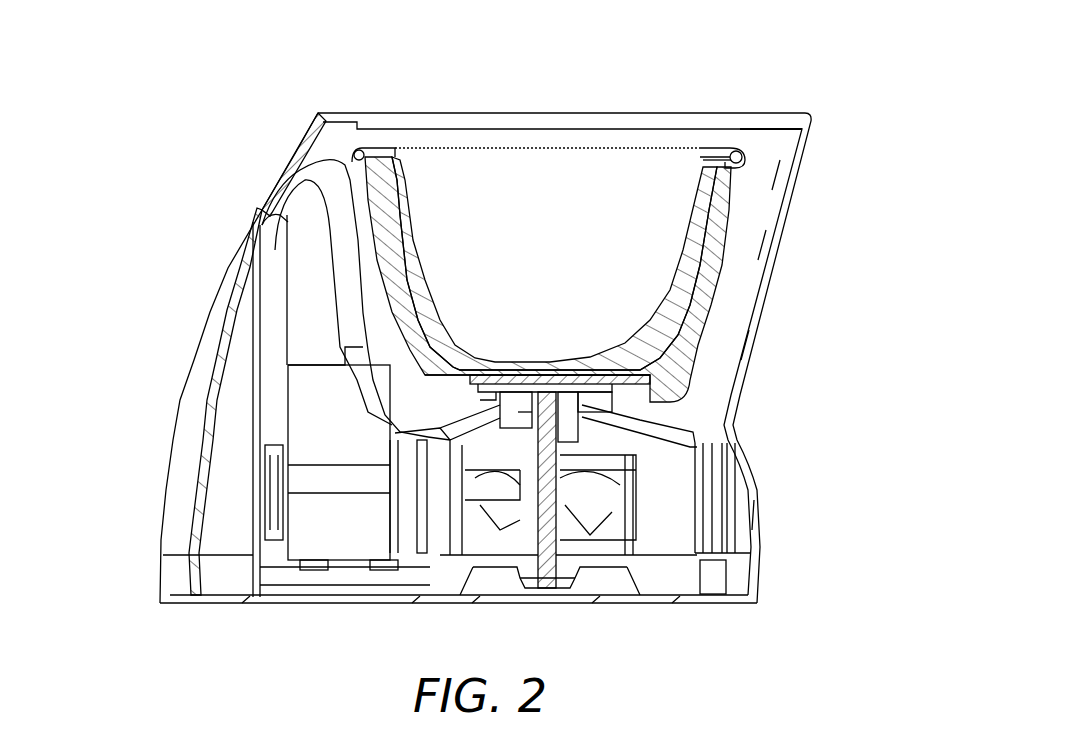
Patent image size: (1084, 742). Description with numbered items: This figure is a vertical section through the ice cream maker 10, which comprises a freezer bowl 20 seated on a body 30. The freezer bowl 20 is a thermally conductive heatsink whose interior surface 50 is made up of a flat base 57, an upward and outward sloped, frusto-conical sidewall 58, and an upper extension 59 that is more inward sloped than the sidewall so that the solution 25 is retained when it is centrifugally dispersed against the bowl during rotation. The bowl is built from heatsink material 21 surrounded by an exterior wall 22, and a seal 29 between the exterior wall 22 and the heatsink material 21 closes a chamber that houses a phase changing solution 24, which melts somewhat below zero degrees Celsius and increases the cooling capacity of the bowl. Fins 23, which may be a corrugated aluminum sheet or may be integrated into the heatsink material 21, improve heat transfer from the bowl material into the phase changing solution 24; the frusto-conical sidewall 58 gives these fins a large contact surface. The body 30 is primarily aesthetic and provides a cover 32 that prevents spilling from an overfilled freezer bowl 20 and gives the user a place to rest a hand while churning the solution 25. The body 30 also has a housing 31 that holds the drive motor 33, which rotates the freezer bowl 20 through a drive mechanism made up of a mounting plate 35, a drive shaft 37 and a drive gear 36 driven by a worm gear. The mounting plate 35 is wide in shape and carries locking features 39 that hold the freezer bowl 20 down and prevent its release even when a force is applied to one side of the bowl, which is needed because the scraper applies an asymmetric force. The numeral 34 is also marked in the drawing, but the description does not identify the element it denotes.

The ice cream maker 10 is at (860, 95).
The freezer bowl 20 is at (586, 213).
The heatsink material 21 is at (400, 148).
The exterior wall 22 is at (726, 176).
The fins 23 is at (707, 240).
The phase changing solution 24 is at (717, 183).
The solution 25 is at (632, 349).
The seal 29 is at (734, 150).
The body 30 is at (172, 292).
The housing 31 is at (207, 412).
The cover 32 is at (287, 170).
The drive motor 33 is at (327, 448).
The support arm 34 is at (578, 384).
The mounting plate 35 is at (677, 427).
The drive gear 36 is at (580, 504).
The drive shaft 37 is at (550, 547).
The locking features 39 is at (490, 393).
The interior surface 50 is at (680, 247).
The base 57 is at (528, 367).
The sidewall 58 is at (677, 287).
The upper extension 59 is at (695, 160).